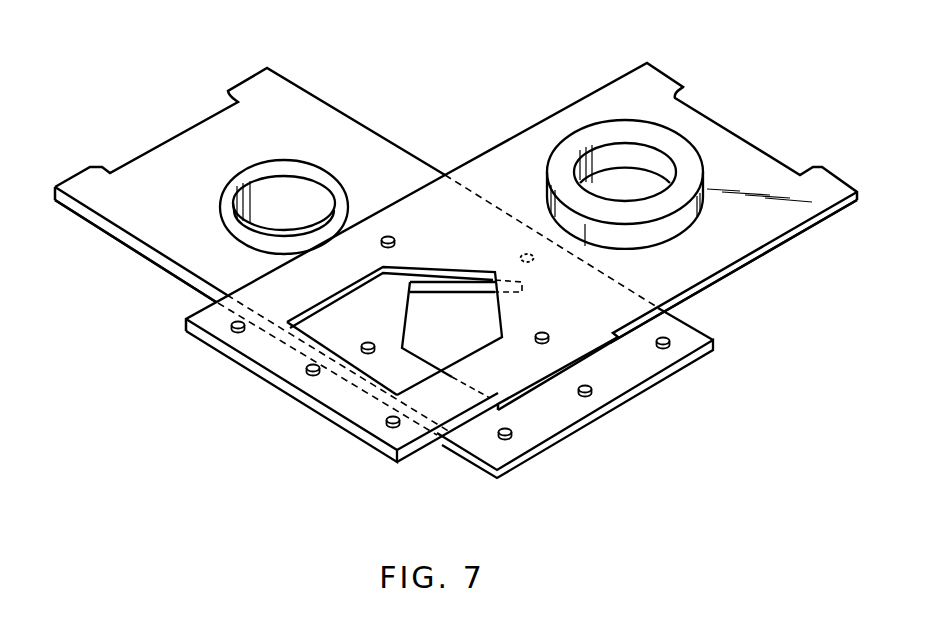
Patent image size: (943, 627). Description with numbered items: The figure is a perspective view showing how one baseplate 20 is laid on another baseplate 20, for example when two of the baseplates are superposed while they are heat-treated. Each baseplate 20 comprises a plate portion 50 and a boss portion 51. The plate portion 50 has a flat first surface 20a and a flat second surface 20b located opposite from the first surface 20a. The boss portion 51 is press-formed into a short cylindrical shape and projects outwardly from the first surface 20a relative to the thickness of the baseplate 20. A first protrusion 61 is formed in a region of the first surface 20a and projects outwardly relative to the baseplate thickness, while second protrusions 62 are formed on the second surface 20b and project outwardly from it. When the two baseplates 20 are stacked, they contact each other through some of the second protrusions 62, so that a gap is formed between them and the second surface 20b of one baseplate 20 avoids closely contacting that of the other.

The baseplate 20 is at (456, 253).
The first surface 20a is at (500, 373).
The second surface 20b is at (388, 162).
The plate portion 50 is at (193, 263).
The boss portion 51 is at (273, 190).
The first protrusion 61 is at (310, 378).
The second protrusions 62 is at (396, 240).